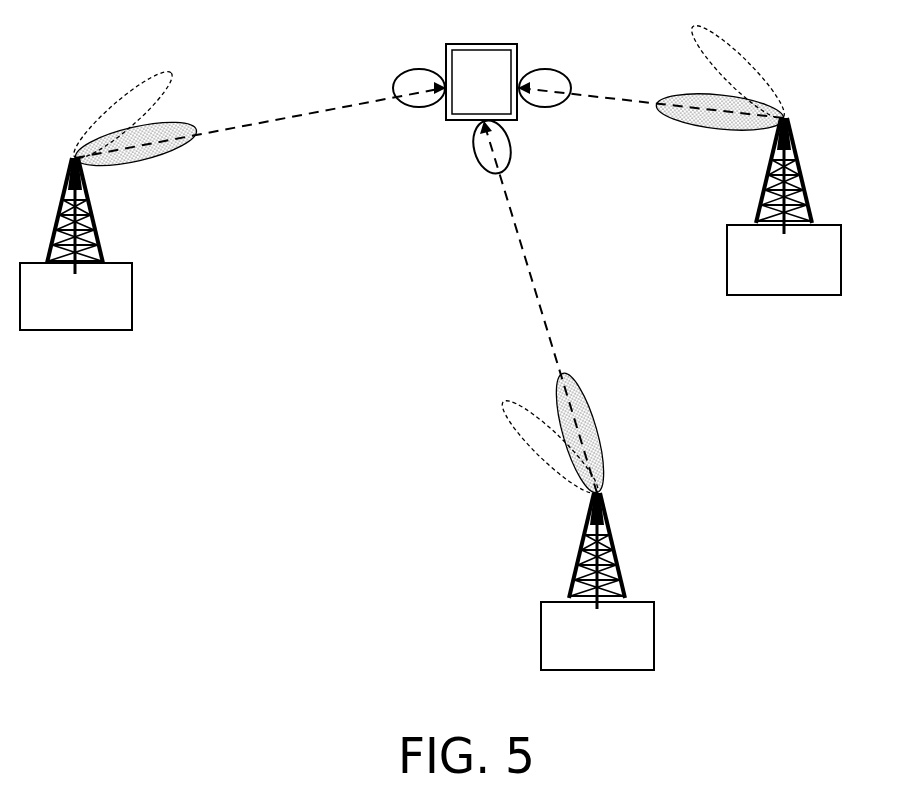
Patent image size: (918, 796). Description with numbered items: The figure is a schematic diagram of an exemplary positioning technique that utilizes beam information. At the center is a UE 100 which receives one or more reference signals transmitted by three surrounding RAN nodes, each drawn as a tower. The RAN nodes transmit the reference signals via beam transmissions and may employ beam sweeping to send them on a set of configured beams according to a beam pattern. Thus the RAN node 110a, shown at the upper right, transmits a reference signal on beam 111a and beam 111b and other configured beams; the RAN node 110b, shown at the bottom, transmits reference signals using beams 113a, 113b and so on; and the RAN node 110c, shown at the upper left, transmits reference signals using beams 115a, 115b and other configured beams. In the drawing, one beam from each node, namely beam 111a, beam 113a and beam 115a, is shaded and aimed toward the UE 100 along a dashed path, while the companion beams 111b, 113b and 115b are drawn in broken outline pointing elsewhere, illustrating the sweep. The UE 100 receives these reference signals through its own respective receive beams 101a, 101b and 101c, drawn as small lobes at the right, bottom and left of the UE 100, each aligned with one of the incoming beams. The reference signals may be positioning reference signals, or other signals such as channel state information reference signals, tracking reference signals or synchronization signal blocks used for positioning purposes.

The UE 100 is at (481, 82).
The receive beam 101a is at (538, 68).
The receive beam 101b is at (480, 168).
The receive beam 101c is at (423, 70).
The RAN node 110a is at (784, 206).
The RAN node 110b is at (597, 581).
The RAN node 110c is at (76, 244).
The beam 111a is at (735, 128).
The beam 111b is at (765, 83).
The beam 113a is at (600, 448).
The beam 113b is at (542, 465).
The beam 115a is at (155, 153).
The beam 115b is at (143, 83).